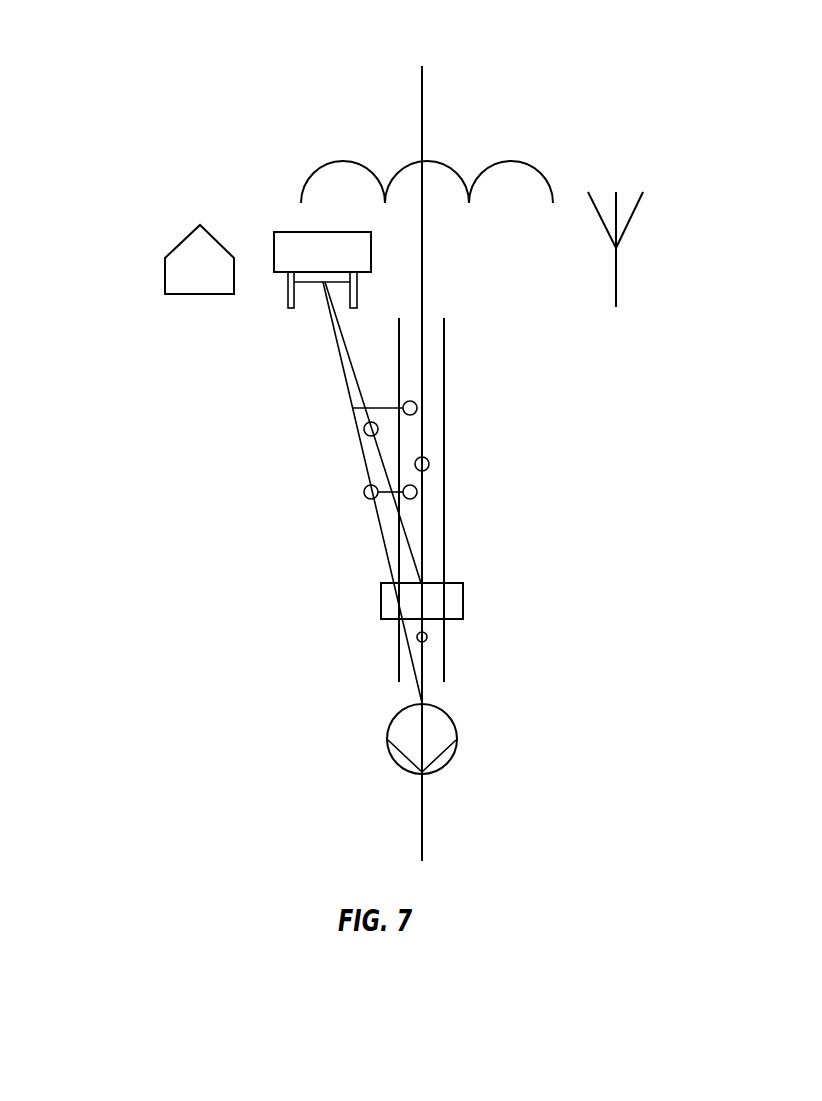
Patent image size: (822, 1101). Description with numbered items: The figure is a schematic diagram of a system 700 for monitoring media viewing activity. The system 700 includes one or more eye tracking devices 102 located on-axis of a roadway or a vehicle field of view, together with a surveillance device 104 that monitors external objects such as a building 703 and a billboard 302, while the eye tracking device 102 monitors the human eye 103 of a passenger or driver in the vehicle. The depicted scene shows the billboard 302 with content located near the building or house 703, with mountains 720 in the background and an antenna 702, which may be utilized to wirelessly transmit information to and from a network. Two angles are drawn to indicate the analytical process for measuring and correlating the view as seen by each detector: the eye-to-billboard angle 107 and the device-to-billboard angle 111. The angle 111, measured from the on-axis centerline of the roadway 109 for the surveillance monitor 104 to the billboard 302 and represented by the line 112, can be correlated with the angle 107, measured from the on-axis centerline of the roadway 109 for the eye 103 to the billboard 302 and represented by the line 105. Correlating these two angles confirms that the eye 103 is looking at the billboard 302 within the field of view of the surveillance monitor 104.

The system 700 is at (125, 46).
The mountains 720 is at (346, 160).
The billboard 302 is at (287, 232).
The building 703 is at (192, 258).
The antenna 702 is at (616, 278).
The angle 107 is at (418, 406).
The line 112 is at (364, 431).
The line 105 is at (365, 494).
The on-axis centerline of the roadway 109 is at (429, 464).
The angle 111 is at (417, 490).
The surveillance device 104 is at (463, 600).
The eye tracking device 102 is at (427, 638).
The human eye 103 is at (442, 723).